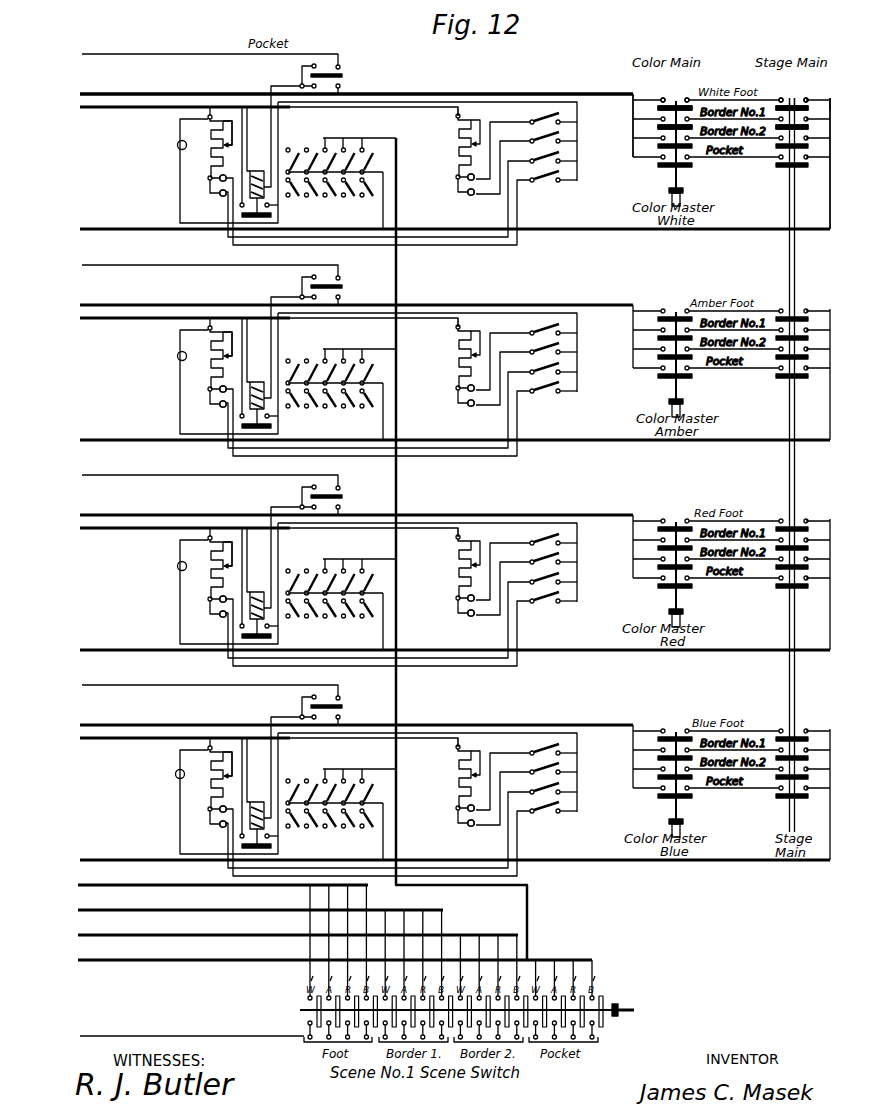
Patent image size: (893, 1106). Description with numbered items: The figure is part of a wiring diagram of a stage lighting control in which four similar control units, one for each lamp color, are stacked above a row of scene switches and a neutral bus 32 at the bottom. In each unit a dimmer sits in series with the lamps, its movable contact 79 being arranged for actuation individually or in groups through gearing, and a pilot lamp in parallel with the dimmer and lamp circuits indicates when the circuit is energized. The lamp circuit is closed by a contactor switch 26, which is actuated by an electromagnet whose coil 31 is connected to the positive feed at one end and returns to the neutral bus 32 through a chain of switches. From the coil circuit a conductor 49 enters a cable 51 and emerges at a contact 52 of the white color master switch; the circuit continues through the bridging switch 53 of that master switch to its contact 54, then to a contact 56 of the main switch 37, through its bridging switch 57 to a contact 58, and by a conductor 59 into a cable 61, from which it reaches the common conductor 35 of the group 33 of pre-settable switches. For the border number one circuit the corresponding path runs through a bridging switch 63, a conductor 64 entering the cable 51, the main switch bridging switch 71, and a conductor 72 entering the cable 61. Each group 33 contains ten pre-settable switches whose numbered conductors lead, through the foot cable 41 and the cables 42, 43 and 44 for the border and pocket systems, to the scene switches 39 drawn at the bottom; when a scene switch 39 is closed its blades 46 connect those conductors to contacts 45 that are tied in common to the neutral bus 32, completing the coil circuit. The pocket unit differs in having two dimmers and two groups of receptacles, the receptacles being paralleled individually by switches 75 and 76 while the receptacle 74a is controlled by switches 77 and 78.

The contactor switch 26 is at (272, 215).
The coil 31 is at (265, 172).
The neutral bus 32 is at (246, 1035).
The group of pre-settable switches 33 is at (339, 169).
The common conductor 35 is at (367, 156).
The main switch 37 is at (797, 472).
The scene switch 39 is at (620, 1014).
The white conductor 41 is at (153, 886).
The cable 42 is at (168, 911).
The cable 43 is at (183, 936).
The cable 44 is at (398, 297).
The contacts 45 is at (307, 1024).
The scene switch blade 46 is at (316, 1010).
The conductor 49 is at (634, 92).
The cable 51 is at (175, 92).
The contact 52 is at (662, 98).
The bridging switch 53 is at (676, 100).
The contact 54 is at (689, 98).
The contact 56 is at (781, 98).
The bridging switch 57 is at (800, 95).
The contact 58 is at (806, 98).
The conductor 59 is at (830, 98).
The cable 61 is at (831, 219).
The bridging switch 63 is at (658, 127).
The conductor 64 is at (658, 108).
The bridging switch 71 is at (808, 127).
The conductor 72 is at (808, 108).
The receptacle 74a is at (469, 196).
The switch 75 is at (539, 158).
The switch 76 is at (539, 177).
The switch 77 is at (539, 119).
The switch 78 is at (543, 138).
The movable contact 79 is at (233, 128).